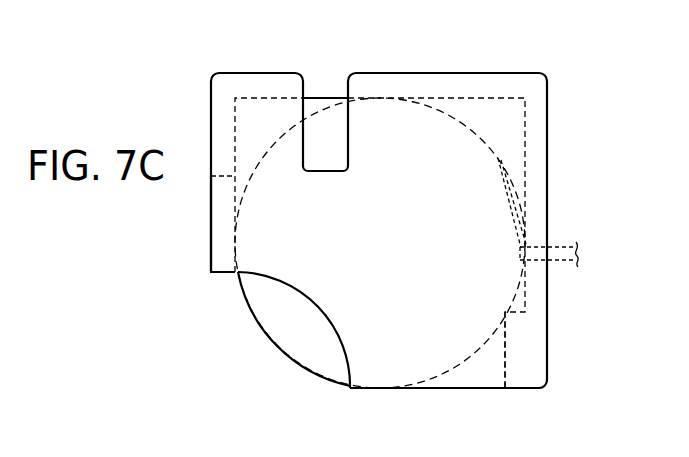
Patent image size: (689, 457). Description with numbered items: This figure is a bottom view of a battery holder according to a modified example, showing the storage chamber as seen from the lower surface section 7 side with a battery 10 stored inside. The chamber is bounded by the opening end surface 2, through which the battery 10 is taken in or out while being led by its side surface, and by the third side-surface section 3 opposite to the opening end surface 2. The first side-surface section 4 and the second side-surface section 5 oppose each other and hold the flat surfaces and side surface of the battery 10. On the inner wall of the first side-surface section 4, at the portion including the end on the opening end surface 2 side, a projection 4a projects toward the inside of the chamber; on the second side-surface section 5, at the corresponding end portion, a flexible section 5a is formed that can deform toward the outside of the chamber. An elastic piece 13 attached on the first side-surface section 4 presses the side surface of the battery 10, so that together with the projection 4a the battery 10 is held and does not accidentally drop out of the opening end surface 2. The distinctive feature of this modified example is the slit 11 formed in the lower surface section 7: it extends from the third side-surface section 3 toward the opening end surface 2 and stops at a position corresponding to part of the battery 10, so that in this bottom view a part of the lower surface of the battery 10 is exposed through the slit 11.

The opening end surface 2 is at (453, 391).
The third side-surface section 3 is at (451, 73).
The first side-surface section 4 is at (548, 143).
The projection 4a is at (526, 356).
The second side-surface section 5 is at (211, 133).
The flexible section 5a is at (211, 218).
The lower surface section 7 is at (490, 118).
The battery 10 is at (281, 334).
The slit 11 is at (347, 143).
The elastic piece 13 is at (499, 166).